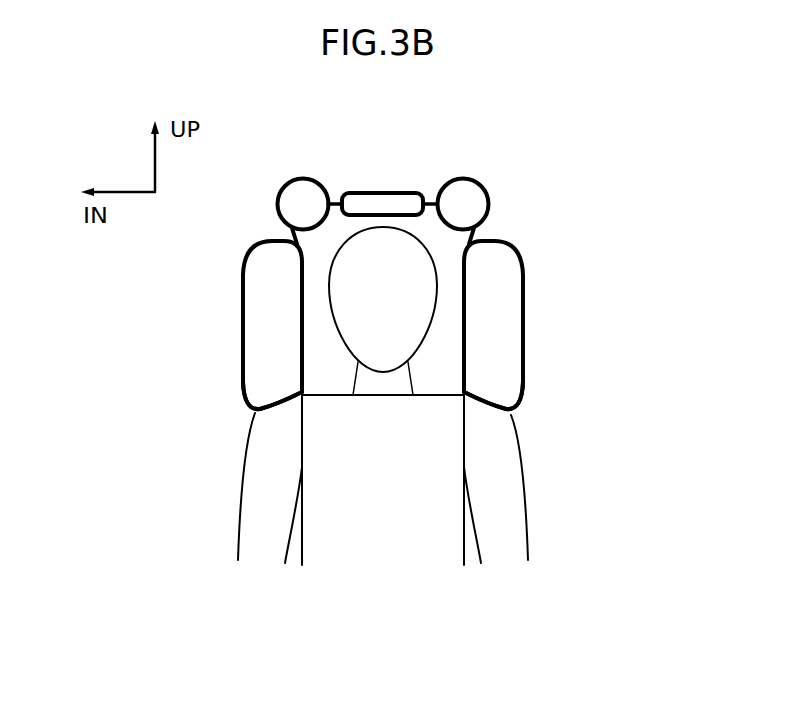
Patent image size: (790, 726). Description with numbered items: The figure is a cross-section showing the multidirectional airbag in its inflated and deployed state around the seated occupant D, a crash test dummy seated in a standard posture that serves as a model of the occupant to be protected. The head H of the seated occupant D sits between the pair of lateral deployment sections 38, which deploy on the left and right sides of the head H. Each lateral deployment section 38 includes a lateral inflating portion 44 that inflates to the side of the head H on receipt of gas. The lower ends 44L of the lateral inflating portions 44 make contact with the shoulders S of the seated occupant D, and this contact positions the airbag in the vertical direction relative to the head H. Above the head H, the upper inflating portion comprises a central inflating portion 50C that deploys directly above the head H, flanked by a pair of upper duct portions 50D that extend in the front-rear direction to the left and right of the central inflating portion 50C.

The lateral deployment sections 38 is at (380, 349).
The lateral inflating portion 44 is at (260, 350).
The lower ends of the lateral inflating portions 44L is at (275, 402).
The central inflating portion 50C is at (366, 193).
The upper duct portions 50D is at (297, 192).
The head H is at (410, 252).
The shoulders S is at (273, 421).
The seated occupant (crash test dummy) D is at (530, 487).